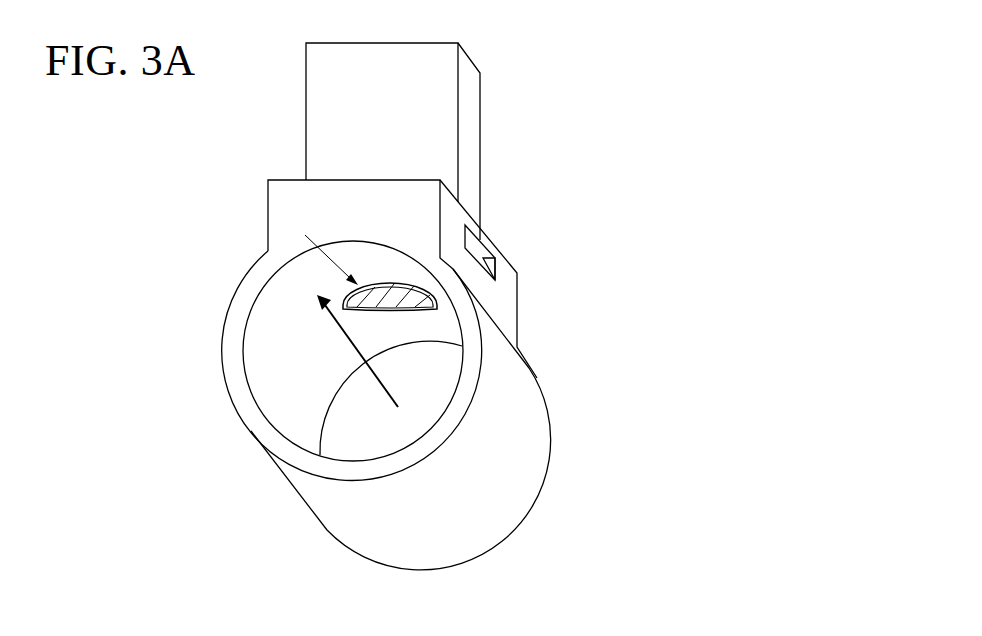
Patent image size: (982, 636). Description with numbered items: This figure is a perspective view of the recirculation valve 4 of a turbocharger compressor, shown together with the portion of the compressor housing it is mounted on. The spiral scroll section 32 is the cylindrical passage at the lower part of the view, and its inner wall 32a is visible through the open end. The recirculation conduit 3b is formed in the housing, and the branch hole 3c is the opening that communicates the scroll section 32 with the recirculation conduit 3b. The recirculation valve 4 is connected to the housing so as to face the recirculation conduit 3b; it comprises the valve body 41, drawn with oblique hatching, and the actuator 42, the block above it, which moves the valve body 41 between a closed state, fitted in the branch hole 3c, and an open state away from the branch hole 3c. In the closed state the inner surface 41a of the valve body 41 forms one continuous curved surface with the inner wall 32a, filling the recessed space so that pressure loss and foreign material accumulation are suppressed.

The recirculation valve 4 is at (433, 210).
The actuator 42 is at (306, 100).
The valve body 41 is at (319, 250).
The inner surface 41a is at (388, 308).
The recirculation conduit 3b is at (483, 240).
The branch hole 3c is at (387, 282).
The scroll section 32 is at (547, 447).
The inner wall 32a is at (428, 336).